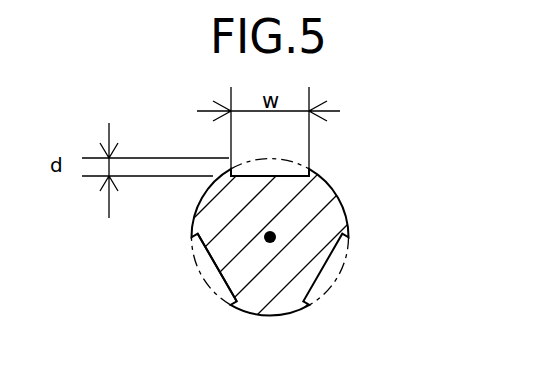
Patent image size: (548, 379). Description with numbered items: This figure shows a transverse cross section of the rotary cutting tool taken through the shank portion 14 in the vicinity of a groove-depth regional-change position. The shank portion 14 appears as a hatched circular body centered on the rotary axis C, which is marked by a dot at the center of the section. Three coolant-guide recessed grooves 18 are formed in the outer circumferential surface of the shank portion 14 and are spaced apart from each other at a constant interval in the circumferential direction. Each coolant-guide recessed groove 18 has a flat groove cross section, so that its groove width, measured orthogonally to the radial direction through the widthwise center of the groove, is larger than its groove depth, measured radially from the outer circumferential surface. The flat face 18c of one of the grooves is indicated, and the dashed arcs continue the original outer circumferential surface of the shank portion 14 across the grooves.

The coolant-guide recessed groove 18 is at (352, 299).
The flat portion (cut face) 18c is at (210, 270).
The shank portion 14 is at (263, 299).
The rotary axis C is at (275, 240).